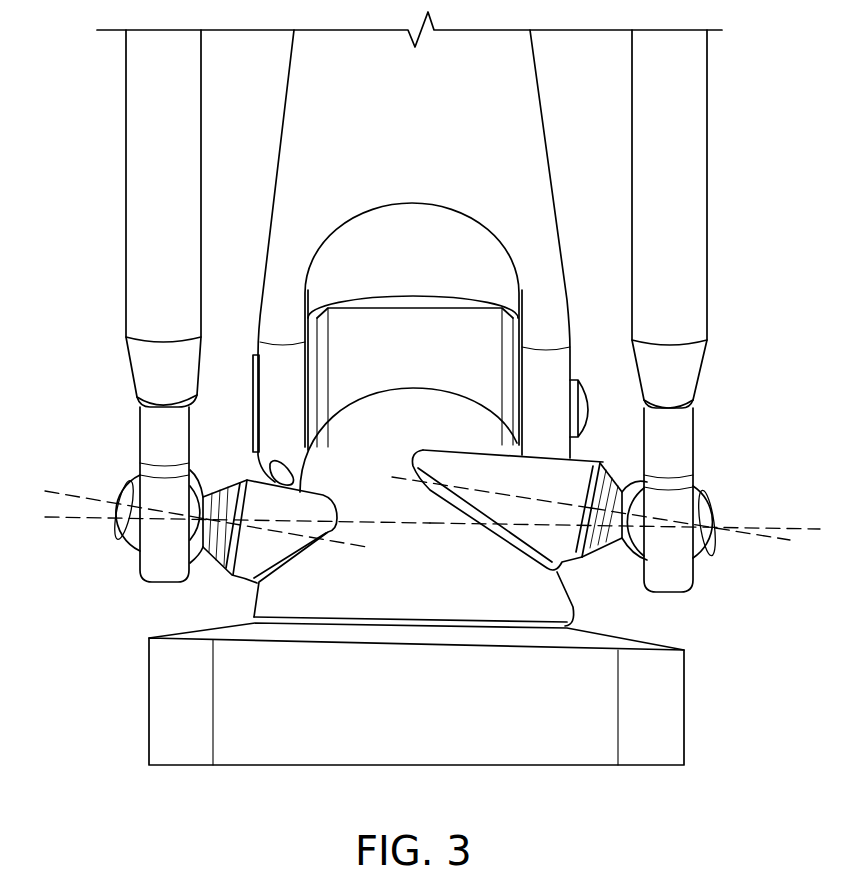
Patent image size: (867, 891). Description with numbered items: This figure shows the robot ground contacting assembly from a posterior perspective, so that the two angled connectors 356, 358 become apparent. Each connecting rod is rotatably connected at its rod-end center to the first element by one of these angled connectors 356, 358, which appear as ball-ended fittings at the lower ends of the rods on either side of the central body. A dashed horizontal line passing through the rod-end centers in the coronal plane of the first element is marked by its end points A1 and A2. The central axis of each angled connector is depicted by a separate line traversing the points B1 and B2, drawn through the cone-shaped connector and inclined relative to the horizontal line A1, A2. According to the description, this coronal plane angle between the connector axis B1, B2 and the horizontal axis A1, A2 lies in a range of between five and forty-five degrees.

The angled connector 356 is at (118, 488).
The angled connector 358 is at (716, 515).
The horizontal axis end point A1 is at (224, 519).
The horizontal axis end point A2 is at (640, 532).
The angled connector axis point B1 is at (304, 488).
The angled connector axis point B2 is at (513, 542).